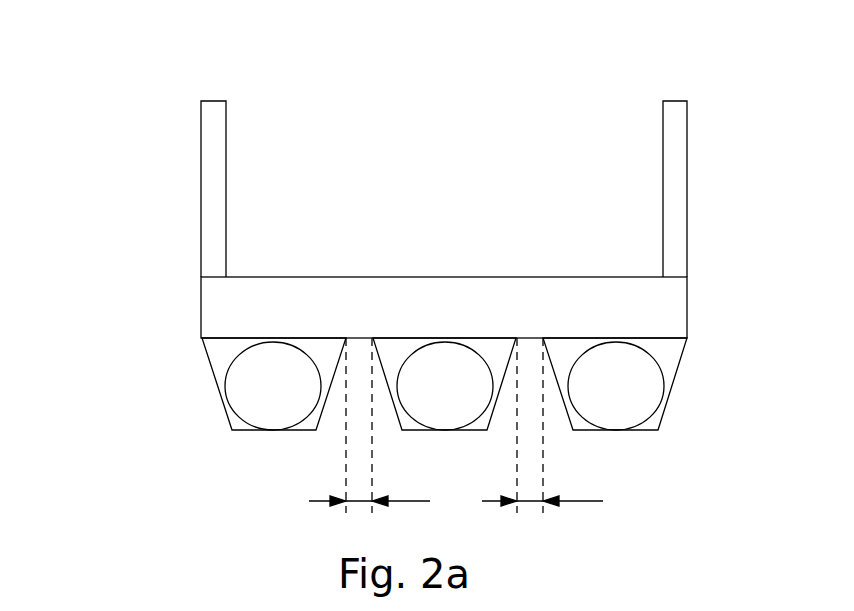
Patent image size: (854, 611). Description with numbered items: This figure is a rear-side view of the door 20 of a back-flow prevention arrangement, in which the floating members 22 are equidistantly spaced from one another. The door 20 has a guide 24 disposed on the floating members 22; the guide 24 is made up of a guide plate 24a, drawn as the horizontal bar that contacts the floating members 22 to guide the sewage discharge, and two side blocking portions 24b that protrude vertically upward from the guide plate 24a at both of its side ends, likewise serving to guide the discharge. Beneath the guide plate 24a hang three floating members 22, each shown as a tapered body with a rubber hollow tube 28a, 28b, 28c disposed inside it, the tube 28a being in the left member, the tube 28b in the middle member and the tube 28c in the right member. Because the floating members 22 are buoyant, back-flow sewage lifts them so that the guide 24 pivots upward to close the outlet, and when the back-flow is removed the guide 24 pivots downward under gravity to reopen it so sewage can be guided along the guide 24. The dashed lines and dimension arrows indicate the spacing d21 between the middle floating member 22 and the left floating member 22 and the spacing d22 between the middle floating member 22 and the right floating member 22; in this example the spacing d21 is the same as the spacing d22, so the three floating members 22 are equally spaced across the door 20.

The door 20 is at (444, 91).
The guide 24 is at (98, 197).
The guide plate 24a is at (218, 296).
The side blocking portions 24b is at (212, 208).
The floating members 22 is at (217, 362).
The rubber hollow tube 28a is at (242, 432).
The rubber hollow tube 28b is at (406, 342).
The rubber hollow tube 28c is at (650, 432).
The spacing d21 is at (369, 425).
The spacing d22 is at (542, 425).